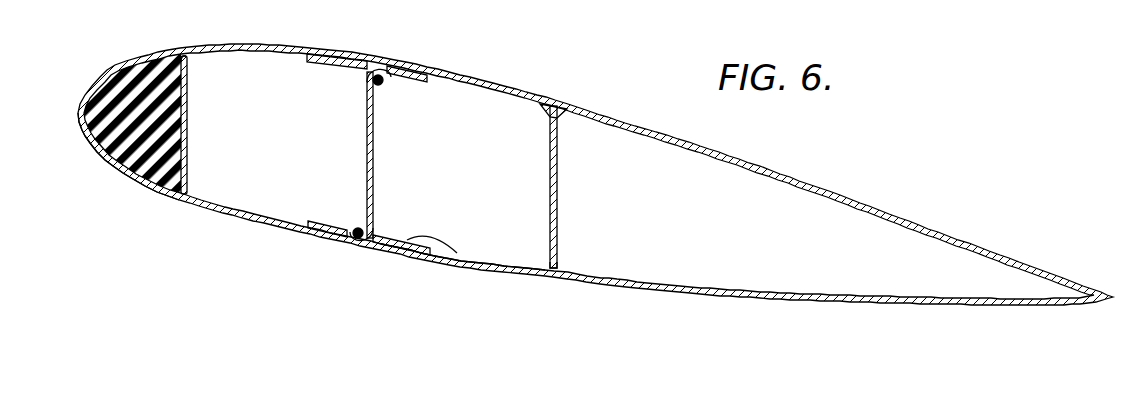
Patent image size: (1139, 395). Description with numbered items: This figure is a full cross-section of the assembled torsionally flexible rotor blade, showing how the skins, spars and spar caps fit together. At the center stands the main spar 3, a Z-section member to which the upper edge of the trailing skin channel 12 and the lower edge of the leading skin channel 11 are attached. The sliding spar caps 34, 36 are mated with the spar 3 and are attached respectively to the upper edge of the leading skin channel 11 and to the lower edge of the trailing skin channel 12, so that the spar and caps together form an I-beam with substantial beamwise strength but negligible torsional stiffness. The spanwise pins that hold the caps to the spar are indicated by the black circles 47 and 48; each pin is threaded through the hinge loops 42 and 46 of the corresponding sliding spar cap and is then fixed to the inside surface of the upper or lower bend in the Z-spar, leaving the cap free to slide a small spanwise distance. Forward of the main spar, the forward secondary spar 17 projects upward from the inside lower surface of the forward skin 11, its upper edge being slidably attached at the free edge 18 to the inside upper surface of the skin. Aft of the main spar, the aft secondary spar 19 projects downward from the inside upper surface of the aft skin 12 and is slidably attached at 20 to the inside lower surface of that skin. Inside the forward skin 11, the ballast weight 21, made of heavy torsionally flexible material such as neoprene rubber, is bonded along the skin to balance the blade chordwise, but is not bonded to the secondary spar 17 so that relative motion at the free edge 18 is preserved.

The main spar 3 is at (376, 149).
The forward skin 11 is at (140, 186).
The aft skin 12 is at (816, 183).
The forward secondary spar 17 is at (188, 104).
The slidable attachment 18 is at (183, 56).
The aft secondary spar 19 is at (559, 185).
The slidable attachment 20 is at (555, 272).
The ballast weight 21 is at (100, 72).
The sliding spar cap 34 is at (307, 73).
The sliding spar cap 36 is at (467, 268).
The hinge loop 42 is at (387, 88).
The hinge loop 46 is at (347, 230).
The spanwise pin 47 is at (357, 247).
The spanwise pin 48 is at (376, 62).